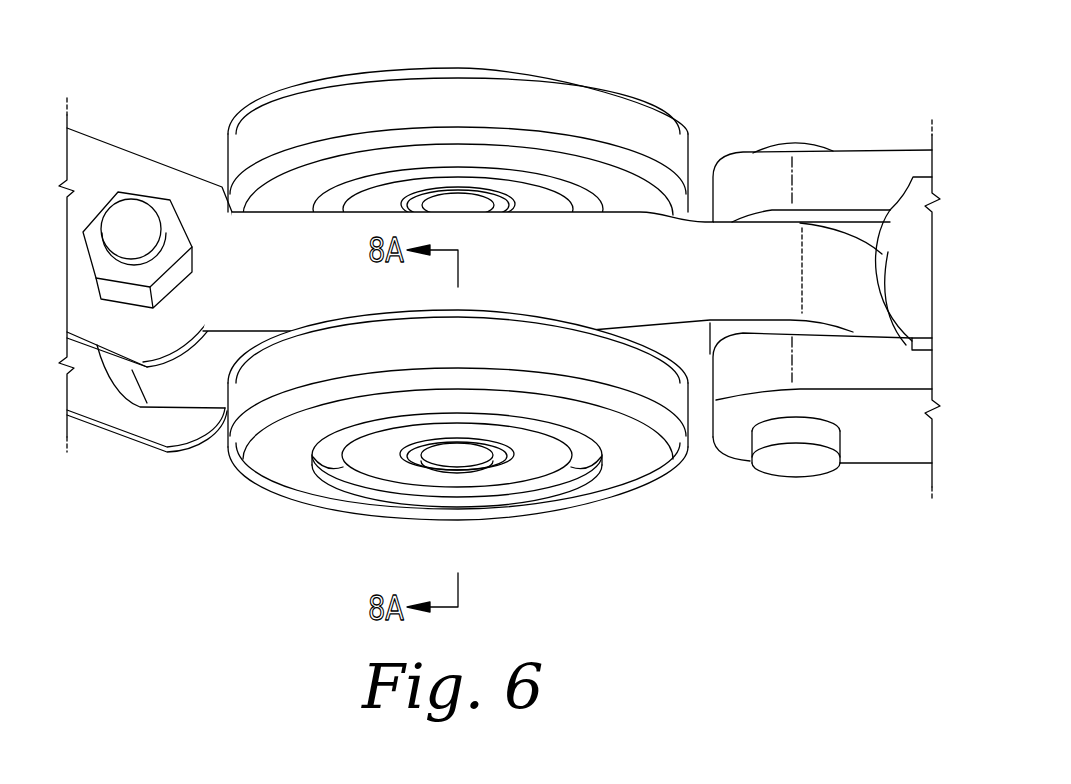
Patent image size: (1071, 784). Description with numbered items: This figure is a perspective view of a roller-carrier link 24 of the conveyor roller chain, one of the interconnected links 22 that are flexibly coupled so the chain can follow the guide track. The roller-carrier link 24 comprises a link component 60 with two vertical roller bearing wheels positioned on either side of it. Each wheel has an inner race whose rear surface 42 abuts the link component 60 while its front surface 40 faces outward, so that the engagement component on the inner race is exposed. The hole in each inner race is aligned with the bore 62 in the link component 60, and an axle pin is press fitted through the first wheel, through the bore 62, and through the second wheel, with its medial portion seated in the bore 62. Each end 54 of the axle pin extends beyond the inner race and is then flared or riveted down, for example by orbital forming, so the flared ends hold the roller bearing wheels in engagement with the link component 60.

The link 22 is at (95, 168).
The roller-carrier link 24 is at (641, 266).
The front surface 40 is at (376, 470).
The rear surface 42 is at (470, 183).
The end 54 is at (470, 456).
The link component 60 is at (173, 387).
The bore 62 is at (428, 464).